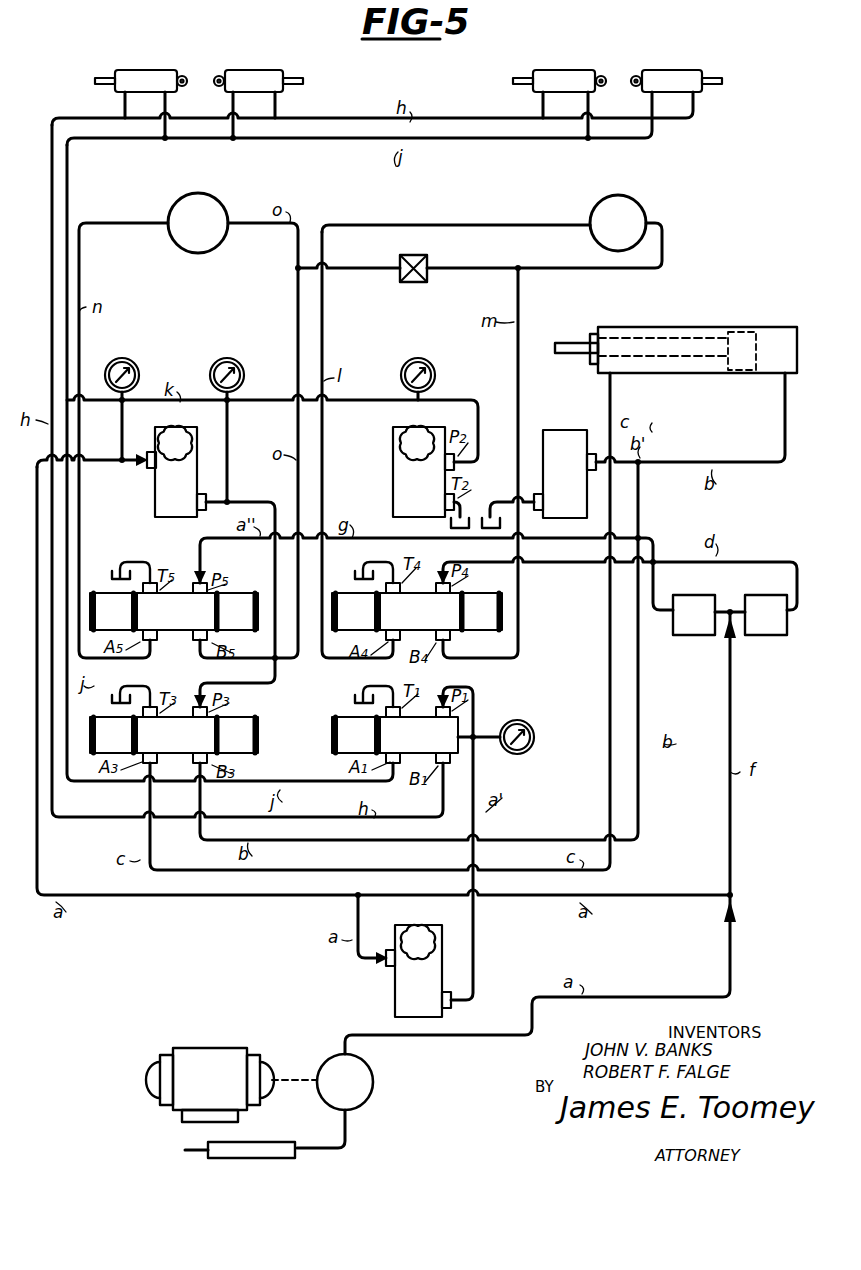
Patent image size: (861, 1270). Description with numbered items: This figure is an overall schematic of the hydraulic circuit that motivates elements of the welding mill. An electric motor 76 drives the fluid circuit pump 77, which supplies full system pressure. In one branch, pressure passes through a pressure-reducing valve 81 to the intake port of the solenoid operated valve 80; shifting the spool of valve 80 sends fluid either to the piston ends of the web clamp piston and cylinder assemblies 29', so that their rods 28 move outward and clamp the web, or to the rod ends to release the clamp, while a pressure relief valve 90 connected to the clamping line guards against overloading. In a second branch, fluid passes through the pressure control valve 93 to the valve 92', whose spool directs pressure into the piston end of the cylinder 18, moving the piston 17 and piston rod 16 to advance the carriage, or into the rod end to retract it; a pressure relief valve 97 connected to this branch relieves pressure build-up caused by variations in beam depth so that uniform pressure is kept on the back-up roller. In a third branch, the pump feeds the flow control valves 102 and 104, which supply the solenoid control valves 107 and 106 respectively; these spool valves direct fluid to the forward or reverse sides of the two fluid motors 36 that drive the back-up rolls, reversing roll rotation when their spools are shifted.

The piston rod 16 is at (561, 343).
The piston 17 is at (730, 360).
The cylinder 18 is at (665, 327).
The rods 28 is at (97, 78).
The web clamp piston and cylinder assemblies 29' is at (409, 57).
The fluid motors 36 is at (180, 206).
The motor 76 is at (201, 1048).
The fluid circuit pump 77 is at (326, 1062).
The solenoid operated valve 80 is at (458, 736).
The pressure-reducing valve 81 is at (396, 980).
The pressure relief valve 90 is at (393, 486).
The valve 92' is at (190, 730).
The pressure control valve 93 is at (155, 488).
The pressure relief valve 97 is at (566, 432).
The flow control valve 102 is at (694, 636).
The flow control valve 104 is at (764, 636).
The solenoid control valve 106 is at (466, 640).
The solenoid control valve 107 is at (91, 593).